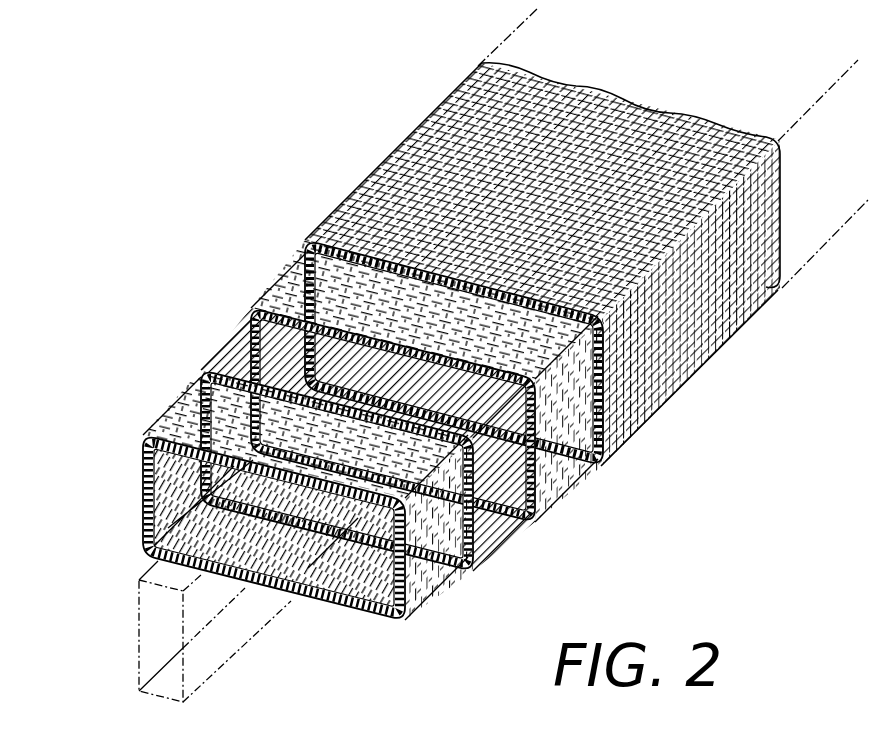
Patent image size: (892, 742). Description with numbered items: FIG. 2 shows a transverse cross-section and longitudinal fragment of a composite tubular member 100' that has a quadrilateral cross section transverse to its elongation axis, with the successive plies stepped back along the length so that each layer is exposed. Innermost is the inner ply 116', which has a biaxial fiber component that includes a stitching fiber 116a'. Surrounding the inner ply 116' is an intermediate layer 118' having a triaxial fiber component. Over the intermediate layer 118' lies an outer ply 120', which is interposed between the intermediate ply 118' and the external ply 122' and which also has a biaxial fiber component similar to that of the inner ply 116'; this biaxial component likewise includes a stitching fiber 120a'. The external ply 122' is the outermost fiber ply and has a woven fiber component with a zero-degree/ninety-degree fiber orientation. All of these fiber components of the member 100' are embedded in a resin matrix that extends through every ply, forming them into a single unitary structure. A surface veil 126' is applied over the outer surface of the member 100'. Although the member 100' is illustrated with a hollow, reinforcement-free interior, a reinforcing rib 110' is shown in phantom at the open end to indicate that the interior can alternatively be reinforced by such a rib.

The member 100' is at (455, 355).
The reinforcing rib 110' is at (180, 631).
The inner ply 116' is at (283, 495).
The stitching fiber 116a' is at (292, 546).
The intermediate layer 118' is at (341, 439).
The outer ply 120' is at (399, 379).
The stitching fiber 120a' is at (615, 436).
The external ply 122' is at (578, 237).
The surface veil 126' is at (620, 48).